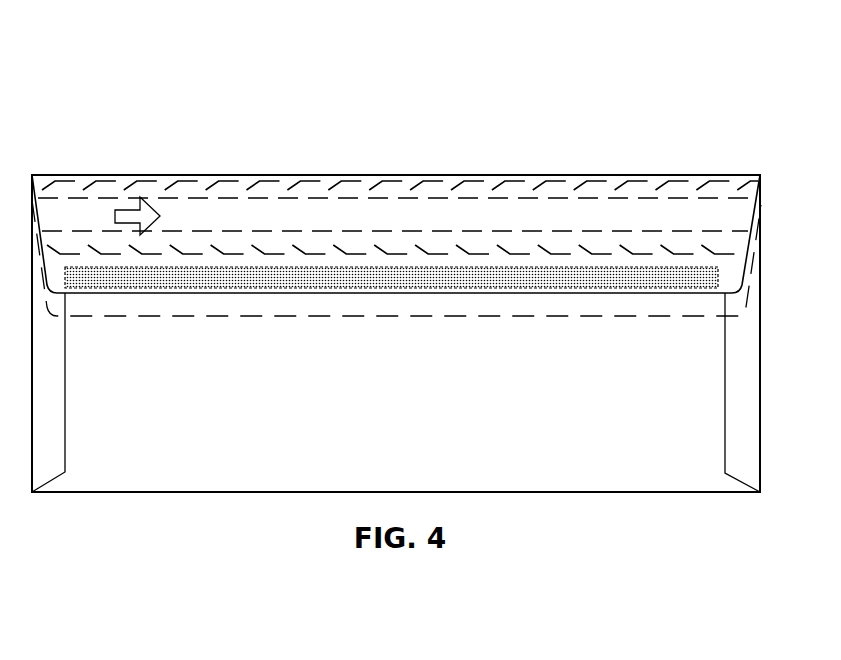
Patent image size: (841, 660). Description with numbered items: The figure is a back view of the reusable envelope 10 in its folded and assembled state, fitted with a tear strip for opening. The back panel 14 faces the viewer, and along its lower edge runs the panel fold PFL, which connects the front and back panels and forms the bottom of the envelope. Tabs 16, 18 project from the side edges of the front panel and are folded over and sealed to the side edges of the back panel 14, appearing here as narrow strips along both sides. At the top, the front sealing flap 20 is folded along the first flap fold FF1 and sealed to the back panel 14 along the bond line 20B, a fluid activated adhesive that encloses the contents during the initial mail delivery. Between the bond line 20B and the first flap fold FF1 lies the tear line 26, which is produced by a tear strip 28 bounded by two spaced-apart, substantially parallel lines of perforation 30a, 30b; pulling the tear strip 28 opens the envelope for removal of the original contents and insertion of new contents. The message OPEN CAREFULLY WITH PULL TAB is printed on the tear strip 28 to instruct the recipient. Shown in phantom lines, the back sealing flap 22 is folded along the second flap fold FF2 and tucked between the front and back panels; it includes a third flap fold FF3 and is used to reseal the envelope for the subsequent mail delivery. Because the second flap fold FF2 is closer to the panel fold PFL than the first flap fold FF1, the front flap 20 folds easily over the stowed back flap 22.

The reusable envelope 10 is at (429, 146).
The back panel 14 is at (191, 421).
The tab 16 is at (50, 428).
The tab 18 is at (733, 432).
The front sealing flap 20 is at (585, 305).
The bond line 20B is at (470, 290).
The back sealing flap 22 is at (334, 320).
The tear line 26 is at (583, 79).
The tear strip 28 is at (693, 190).
The line of perforation 30a is at (645, 190).
The line of perforation 30b is at (723, 250).
The first flap fold FF1 is at (167, 175).
The second flap fold FF2 is at (205, 193).
The third flap fold FF3 is at (250, 198).
The panel fold PFL is at (112, 487).